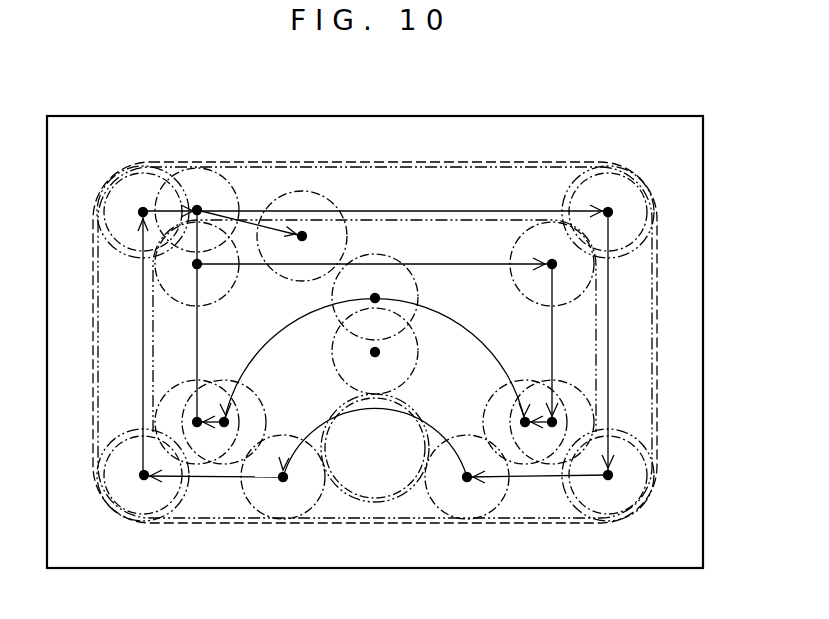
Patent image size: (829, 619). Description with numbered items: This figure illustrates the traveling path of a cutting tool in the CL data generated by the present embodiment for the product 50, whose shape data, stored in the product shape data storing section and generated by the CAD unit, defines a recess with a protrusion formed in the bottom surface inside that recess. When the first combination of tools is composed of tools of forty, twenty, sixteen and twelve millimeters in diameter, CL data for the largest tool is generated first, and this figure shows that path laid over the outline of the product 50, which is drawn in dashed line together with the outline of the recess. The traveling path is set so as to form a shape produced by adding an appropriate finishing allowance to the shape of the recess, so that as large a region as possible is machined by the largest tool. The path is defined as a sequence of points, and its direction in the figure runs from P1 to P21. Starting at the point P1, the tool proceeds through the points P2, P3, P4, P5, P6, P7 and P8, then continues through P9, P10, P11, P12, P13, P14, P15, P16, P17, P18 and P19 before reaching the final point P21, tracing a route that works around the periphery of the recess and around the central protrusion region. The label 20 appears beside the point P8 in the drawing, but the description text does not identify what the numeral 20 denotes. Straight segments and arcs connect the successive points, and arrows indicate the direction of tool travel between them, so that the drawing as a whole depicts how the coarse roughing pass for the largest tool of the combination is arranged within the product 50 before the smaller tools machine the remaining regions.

The product 50 is at (128, 78).
The reference position 20 is at (214, 189).
The traveling path point P1 is at (197, 266).
The traveling path point P2 is at (554, 265).
The traveling path point P3 is at (554, 422).
The traveling path point P4 is at (525, 420).
The traveling path point P5 is at (375, 297).
The traveling path point P6 is at (224, 420).
The traveling path point P7 is at (197, 422).
The traveling path point P8 is at (198, 206).
The traveling path point P9 is at (607, 209).
The traveling path point P10 is at (610, 213).
The traveling path point P11 is at (608, 475).
The traveling path point P12 is at (607, 477).
The traveling path point P13 is at (467, 479).
The traveling path point P14 is at (375, 353).
The traveling path point P15 is at (283, 479).
The traveling path point P16 is at (145, 477).
The traveling path point P17 is at (143, 475).
The traveling path point P18 is at (143, 212).
The traveling path point P19 is at (143, 206).
The traveling path point P21 is at (303, 236).